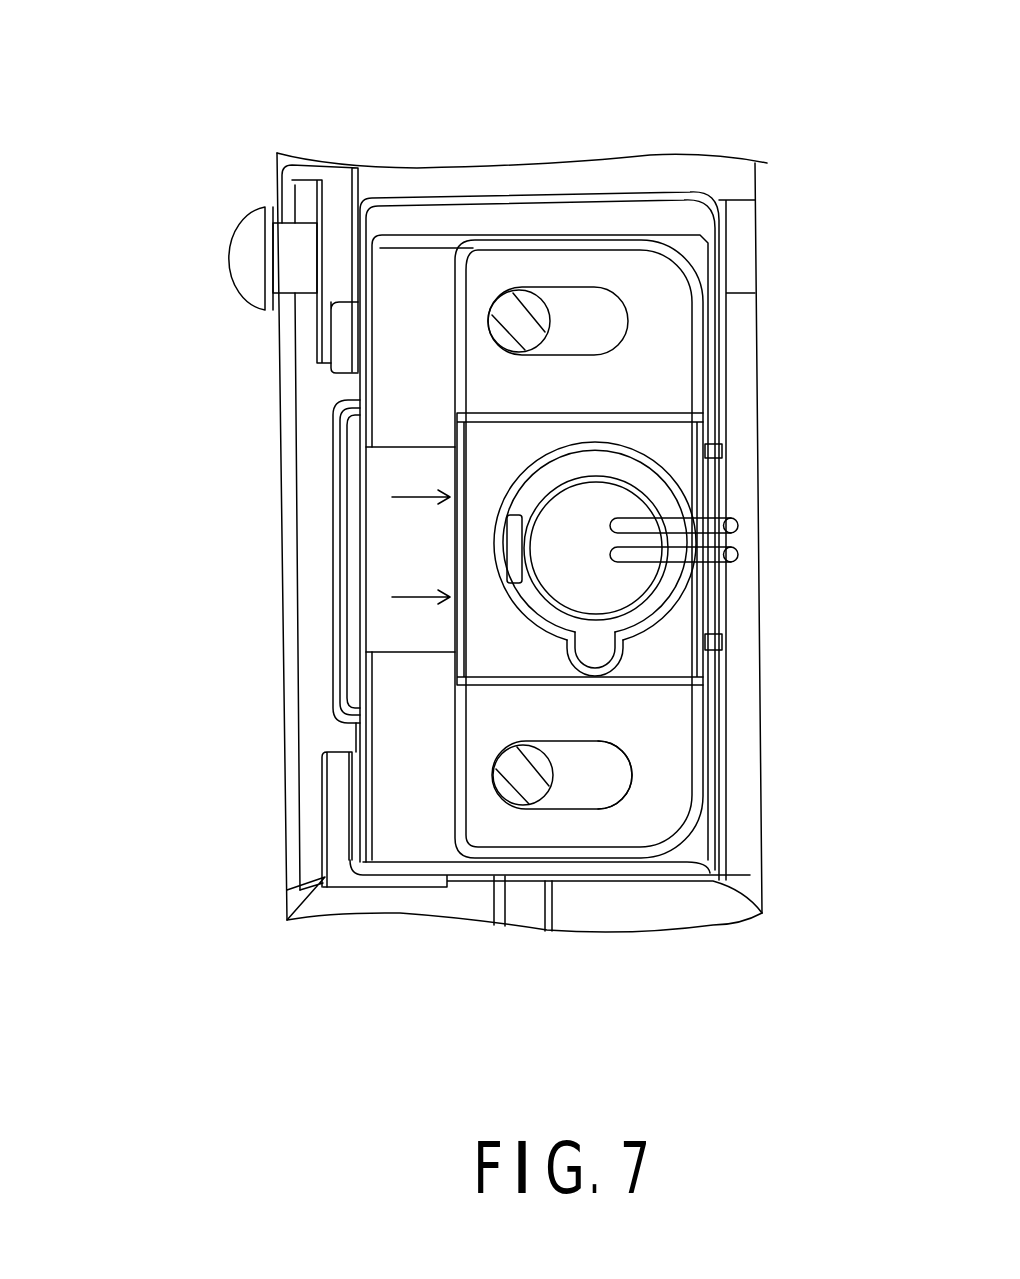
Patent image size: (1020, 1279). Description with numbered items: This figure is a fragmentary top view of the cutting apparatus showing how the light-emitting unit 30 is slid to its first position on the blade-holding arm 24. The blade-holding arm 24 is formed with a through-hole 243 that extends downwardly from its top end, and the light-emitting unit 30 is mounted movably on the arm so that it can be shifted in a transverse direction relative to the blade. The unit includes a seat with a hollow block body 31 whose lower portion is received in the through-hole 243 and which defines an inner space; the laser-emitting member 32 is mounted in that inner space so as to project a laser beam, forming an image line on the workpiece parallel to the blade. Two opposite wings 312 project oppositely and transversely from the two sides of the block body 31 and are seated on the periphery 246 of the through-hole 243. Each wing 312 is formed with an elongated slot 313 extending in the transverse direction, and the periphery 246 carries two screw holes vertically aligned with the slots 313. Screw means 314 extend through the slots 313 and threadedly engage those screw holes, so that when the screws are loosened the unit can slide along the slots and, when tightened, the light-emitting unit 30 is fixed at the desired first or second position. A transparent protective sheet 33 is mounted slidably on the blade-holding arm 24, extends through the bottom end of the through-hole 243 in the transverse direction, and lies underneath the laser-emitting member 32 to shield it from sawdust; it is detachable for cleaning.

The blade-holding arm 24 is at (736, 177).
The light-emitting unit 30 is at (765, 360).
The block body 31 is at (680, 655).
The wings 312 is at (670, 370).
The elongated slots 313 is at (620, 782).
The screw means 314 is at (519, 785).
The laser-emitting member 32 is at (645, 507).
The transparent protective sheet 33 is at (350, 543).
The through-hole 243 is at (392, 625).
The periphery 246 is at (398, 347).